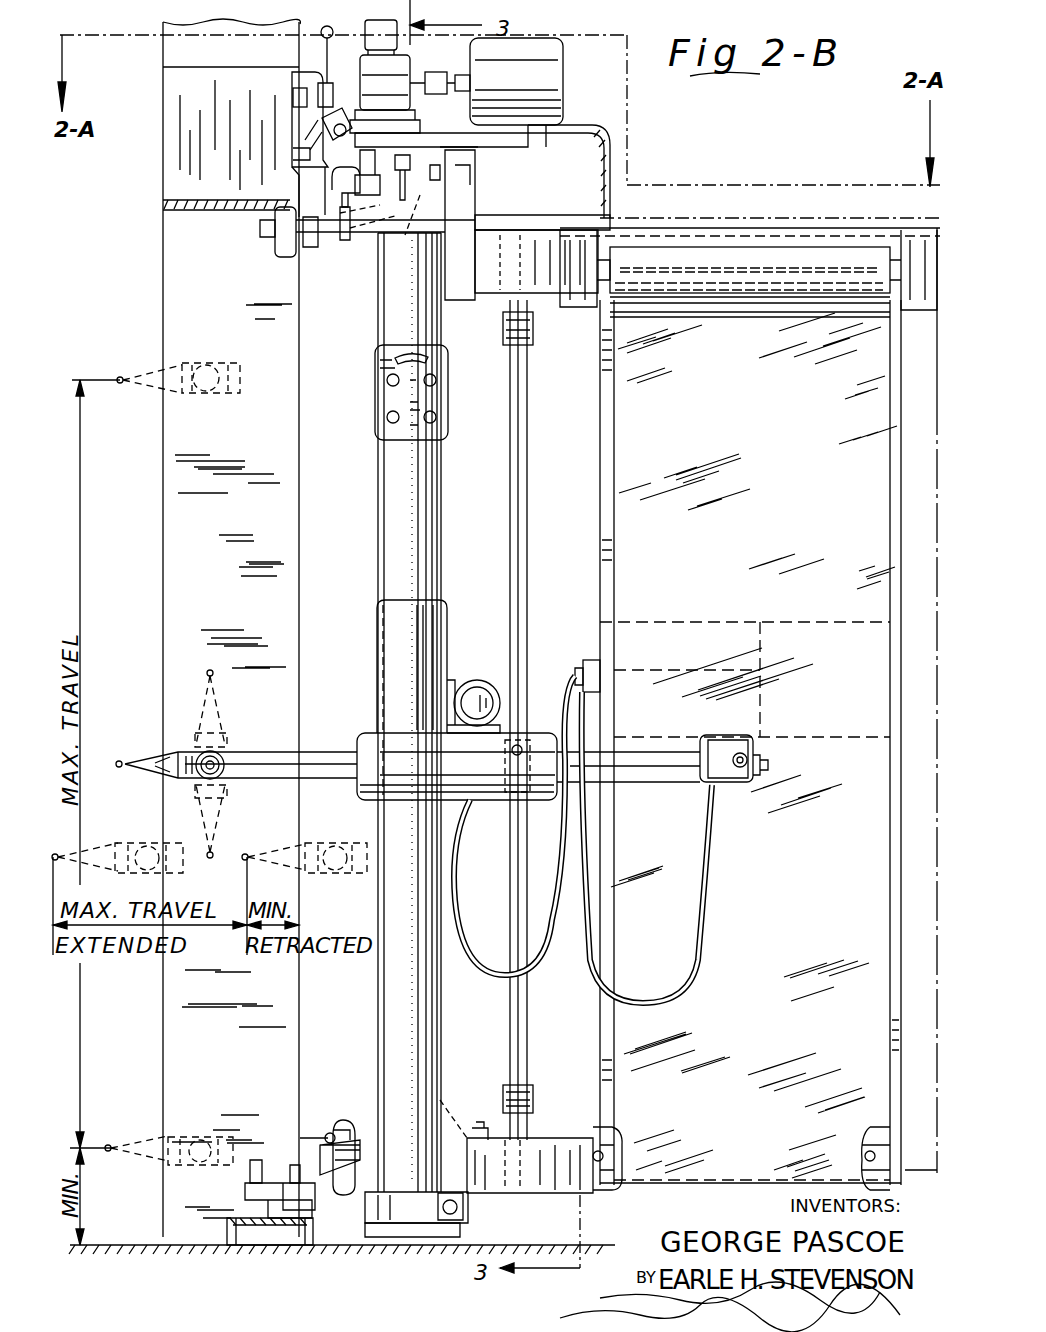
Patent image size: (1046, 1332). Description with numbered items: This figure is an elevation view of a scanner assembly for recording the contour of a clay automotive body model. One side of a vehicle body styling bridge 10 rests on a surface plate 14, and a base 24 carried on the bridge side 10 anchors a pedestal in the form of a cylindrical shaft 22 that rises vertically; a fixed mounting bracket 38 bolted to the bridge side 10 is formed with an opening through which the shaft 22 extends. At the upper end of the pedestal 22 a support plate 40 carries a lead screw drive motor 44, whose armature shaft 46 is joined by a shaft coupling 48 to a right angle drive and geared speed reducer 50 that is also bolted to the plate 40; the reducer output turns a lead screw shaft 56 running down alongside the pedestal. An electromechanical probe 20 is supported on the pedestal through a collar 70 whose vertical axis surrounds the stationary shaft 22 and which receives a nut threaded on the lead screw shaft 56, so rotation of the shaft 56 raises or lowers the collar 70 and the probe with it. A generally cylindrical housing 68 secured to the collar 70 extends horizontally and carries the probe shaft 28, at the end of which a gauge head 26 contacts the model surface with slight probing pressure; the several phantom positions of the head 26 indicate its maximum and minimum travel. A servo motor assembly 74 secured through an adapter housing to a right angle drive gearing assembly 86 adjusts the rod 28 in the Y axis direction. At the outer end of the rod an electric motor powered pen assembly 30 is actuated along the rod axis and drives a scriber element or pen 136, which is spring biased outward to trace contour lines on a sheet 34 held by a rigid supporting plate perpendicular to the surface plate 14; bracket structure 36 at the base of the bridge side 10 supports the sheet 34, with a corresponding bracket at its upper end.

The styling bridge side 10 is at (286, 192).
The surface plate 14 is at (240, 1196).
The electromechanical probe 20 is at (365, 740).
The cylindrical shaft 22 is at (390, 507).
The base 24 is at (465, 1200).
The gauge head 26 is at (122, 379).
The probe shaft 28 is at (250, 752).
The pen assembly 30 is at (755, 733).
The sheet 34 is at (618, 500).
The bracket structure 36 is at (555, 1140).
The fixed mounting bracket 38 is at (378, 220).
The support plate 40 is at (528, 147).
The lead screw drive motor 44 is at (560, 62).
The armature shaft 46 is at (468, 78).
The shaft coupling 48 is at (437, 72).
The right angle drive and geared speed reducer 50 is at (372, 70).
The lead screw shaft 56 is at (380, 537).
The cylindrical housing 68 is at (492, 782).
The collar 70 is at (377, 628).
The servo motor assembly 74 is at (590, 662).
The right angle drive gearing assembly 86 is at (478, 682).
The pen 136 is at (757, 772).